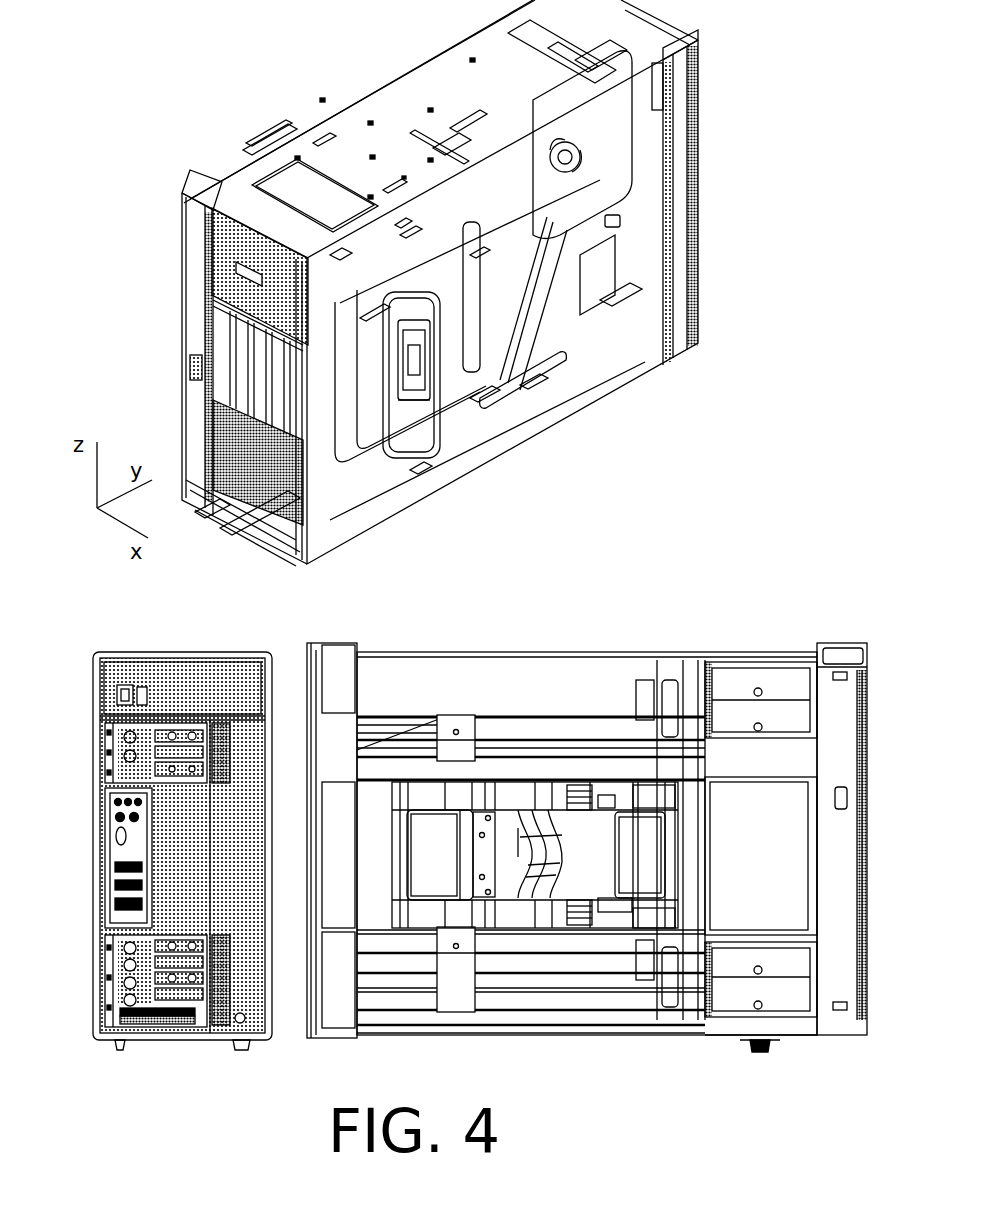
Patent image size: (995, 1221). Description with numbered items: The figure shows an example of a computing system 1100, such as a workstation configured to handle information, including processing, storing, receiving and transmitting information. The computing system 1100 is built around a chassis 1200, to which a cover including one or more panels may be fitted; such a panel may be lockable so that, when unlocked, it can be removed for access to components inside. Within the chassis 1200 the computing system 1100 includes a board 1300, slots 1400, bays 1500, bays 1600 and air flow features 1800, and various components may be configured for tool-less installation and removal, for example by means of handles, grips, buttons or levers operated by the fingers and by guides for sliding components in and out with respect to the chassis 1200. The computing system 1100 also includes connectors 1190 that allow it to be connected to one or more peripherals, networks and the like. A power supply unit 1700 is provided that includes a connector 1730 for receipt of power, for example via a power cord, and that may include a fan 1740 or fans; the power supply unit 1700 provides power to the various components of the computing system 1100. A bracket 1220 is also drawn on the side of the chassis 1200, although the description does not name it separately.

The computing system 1100 is at (278, 75).
The bays 1600 is at (188, 356).
The chassis 1200 is at (578, 450).
The side panel bracket / latch 1220 is at (437, 407).
The fan 1740 is at (187, 673).
The connector 1730 is at (117, 688).
The slots 1400 is at (92, 767).
The connectors 1190 is at (92, 866).
The power supply unit 1700 is at (388, 673).
The air flow features 1800 is at (500, 790).
The board 1300 is at (528, 828).
The bays 1500 is at (762, 645).